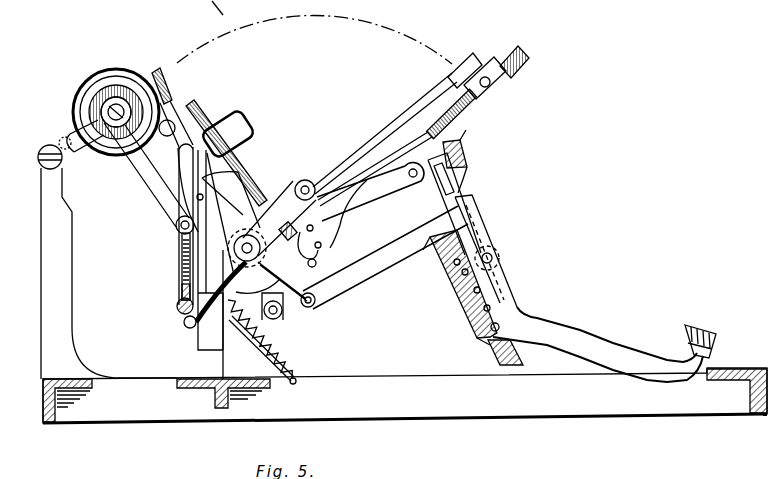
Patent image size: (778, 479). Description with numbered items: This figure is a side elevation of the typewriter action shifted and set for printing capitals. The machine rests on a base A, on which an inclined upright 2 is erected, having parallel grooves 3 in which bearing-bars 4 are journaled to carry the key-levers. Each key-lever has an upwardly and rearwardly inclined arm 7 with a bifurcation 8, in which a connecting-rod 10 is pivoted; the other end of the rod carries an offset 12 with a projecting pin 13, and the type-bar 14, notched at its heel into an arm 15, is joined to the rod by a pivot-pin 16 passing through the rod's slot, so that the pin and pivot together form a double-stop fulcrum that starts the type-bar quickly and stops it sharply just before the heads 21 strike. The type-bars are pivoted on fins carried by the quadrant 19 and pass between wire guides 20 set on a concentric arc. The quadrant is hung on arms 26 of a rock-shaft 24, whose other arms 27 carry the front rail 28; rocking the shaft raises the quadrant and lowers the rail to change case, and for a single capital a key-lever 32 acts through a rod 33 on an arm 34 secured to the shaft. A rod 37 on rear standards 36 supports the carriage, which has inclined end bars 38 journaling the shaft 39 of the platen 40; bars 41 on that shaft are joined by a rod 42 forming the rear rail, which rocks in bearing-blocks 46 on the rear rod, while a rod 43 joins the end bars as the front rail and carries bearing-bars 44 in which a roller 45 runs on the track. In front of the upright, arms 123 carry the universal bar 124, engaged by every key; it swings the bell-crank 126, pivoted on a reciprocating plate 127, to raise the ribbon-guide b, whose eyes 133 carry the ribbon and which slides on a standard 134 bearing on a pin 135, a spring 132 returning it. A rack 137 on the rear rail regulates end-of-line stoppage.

The inclined upright 2 is at (462, 310).
The parallel grooves 3 is at (445, 285).
The bearing-bars 4 is at (442, 277).
The upwardly and rearwardly inclined arm 7 is at (470, 202).
The bifurcation 8 is at (478, 101).
The connecting-rod 10 is at (351, 209).
The offset 12 is at (318, 263).
The projecting pin 13 is at (288, 266).
The type-bar 14 is at (385, 139).
The arm 15 is at (322, 247).
The pivot-pin 16 is at (315, 234).
The quadrant 19 is at (247, 187).
The guides 20 is at (229, 134).
The heads of the type-bars 21 is at (465, 64).
The rock-shaft 24 is at (247, 257).
The arms 26 is at (318, 183).
The arms 27 is at (215, 295).
The front rail 28 is at (176, 311).
The key-lever 32 is at (604, 344).
The rod 33 is at (385, 257).
The arm 34 is at (312, 286).
The rear standards 36 is at (109, 273).
The rod 37 is at (38, 157).
The end bars 38 is at (146, 175).
The shaft 39 is at (79, 110).
The platen 40 is at (90, 86).
The bars 41 is at (82, 152).
The rod 42 is at (60, 142).
The rod 43 is at (176, 229).
The bearing-bars 44 is at (168, 264).
The roller 45 is at (180, 260).
The bearing-blocks 46 is at (169, 295).
The arms 123 is at (477, 161).
The universal bar 124 is at (470, 154).
The bell-crank 126 is at (287, 313).
The plate 127 is at (290, 386).
The spring 132 is at (276, 339).
The loop or eye 133 is at (178, 72).
The standard 134 is at (210, 245).
The pin 135 is at (192, 187).
The rack 137 is at (215, 331).
The base A is at (405, 395).
The ribbon-guide b is at (257, 291).